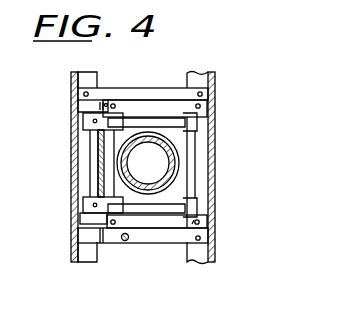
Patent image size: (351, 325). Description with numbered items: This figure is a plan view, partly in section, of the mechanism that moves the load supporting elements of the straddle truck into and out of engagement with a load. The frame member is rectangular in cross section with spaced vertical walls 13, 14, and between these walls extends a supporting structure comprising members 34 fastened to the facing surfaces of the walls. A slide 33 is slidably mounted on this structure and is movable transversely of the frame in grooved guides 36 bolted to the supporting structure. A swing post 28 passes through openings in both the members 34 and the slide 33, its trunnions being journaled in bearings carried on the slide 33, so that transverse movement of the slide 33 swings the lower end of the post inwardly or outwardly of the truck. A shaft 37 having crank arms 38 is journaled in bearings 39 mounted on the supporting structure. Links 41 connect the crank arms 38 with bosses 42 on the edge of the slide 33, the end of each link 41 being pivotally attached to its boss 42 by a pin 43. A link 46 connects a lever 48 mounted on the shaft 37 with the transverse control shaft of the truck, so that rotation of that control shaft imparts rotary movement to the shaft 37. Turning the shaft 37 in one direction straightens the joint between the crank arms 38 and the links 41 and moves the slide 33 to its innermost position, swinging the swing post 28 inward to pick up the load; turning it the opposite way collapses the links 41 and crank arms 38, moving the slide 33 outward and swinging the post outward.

The vertical wall 13 is at (71, 73).
The vertical wall 14 is at (215, 73).
The swing post 28 is at (181, 161).
The slide 33 is at (186, 177).
The member 34 is at (122, 88).
The grooved guide 36 is at (160, 88).
The shaft 37 is at (78, 160).
The crank arm 38 is at (83, 127).
The bearing 39 is at (78, 105).
The link 41 is at (167, 117).
The boss 42 is at (195, 125).
The pin 43 is at (207, 212).
The link 46 is at (125, 242).
The lever 48 is at (110, 243).